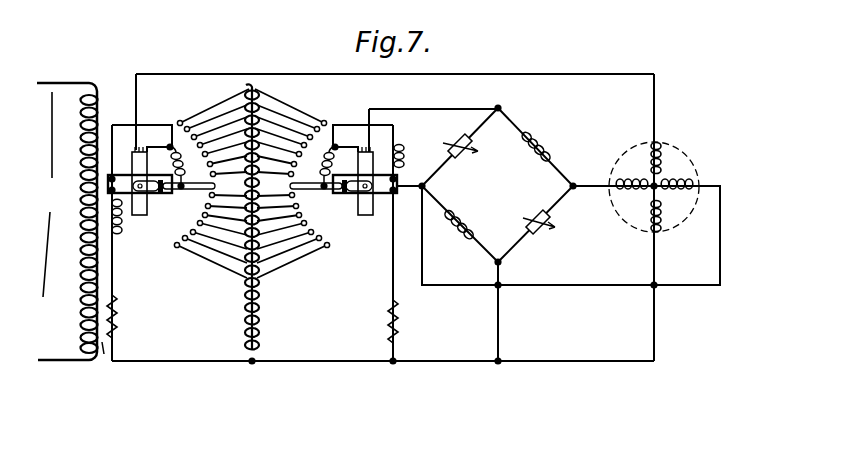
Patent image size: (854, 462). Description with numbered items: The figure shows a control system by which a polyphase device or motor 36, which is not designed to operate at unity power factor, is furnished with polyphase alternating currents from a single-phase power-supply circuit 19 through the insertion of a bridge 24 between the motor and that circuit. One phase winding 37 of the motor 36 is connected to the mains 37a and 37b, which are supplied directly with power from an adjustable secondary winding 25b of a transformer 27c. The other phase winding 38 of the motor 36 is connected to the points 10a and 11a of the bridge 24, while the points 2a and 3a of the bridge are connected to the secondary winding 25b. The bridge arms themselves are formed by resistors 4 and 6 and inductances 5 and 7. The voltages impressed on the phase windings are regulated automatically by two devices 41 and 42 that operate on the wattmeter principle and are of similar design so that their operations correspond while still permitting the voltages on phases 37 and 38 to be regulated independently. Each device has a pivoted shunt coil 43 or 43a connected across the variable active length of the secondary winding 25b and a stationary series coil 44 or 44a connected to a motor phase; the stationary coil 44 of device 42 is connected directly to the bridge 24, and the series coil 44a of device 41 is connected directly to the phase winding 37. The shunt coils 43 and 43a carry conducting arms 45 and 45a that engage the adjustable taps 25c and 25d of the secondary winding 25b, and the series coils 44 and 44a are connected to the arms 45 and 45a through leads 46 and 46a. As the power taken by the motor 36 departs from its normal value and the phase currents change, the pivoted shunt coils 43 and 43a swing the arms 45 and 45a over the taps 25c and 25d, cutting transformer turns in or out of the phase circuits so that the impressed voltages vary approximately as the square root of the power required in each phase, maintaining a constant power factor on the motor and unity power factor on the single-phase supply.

The single-phase power-supply circuit 19 is at (67, 221).
The transformer 27c is at (104, 363).
The adjustable secondary winding 25b is at (268, 324).
The adjustable tap 25c is at (327, 122).
The adjustable tap 25d is at (177, 122).
The main 37a is at (512, 74).
The main 37b is at (469, 365).
The wattmeter device 41 is at (161, 192).
The wattmeter device 42 is at (357, 188).
The pivoted shunt coil 43 is at (406, 172).
The pivoted shunt coil 43a is at (165, 195).
The stationary series coil 44 is at (356, 171).
The stationary series coil 44a is at (150, 171).
The conducting arm 45 is at (325, 189).
The conducting arm 45a is at (195, 189).
The lead 46 is at (339, 166).
The lead 46a is at (169, 166).
The bridge 24 is at (498, 183).
The bridge point 2a is at (507, 98).
The bridge point 3a is at (501, 264).
The bridge point 10a is at (426, 187).
The bridge point 11a is at (562, 189).
The variable resistor 4 is at (452, 146).
The inductance 5 is at (548, 156).
The variable resistor 6 is at (556, 233).
The inductance 7 is at (453, 232).
The polyphase device or motor 36 is at (679, 158).
The phase winding 37 is at (661, 165).
The phase winding 38 is at (632, 198).